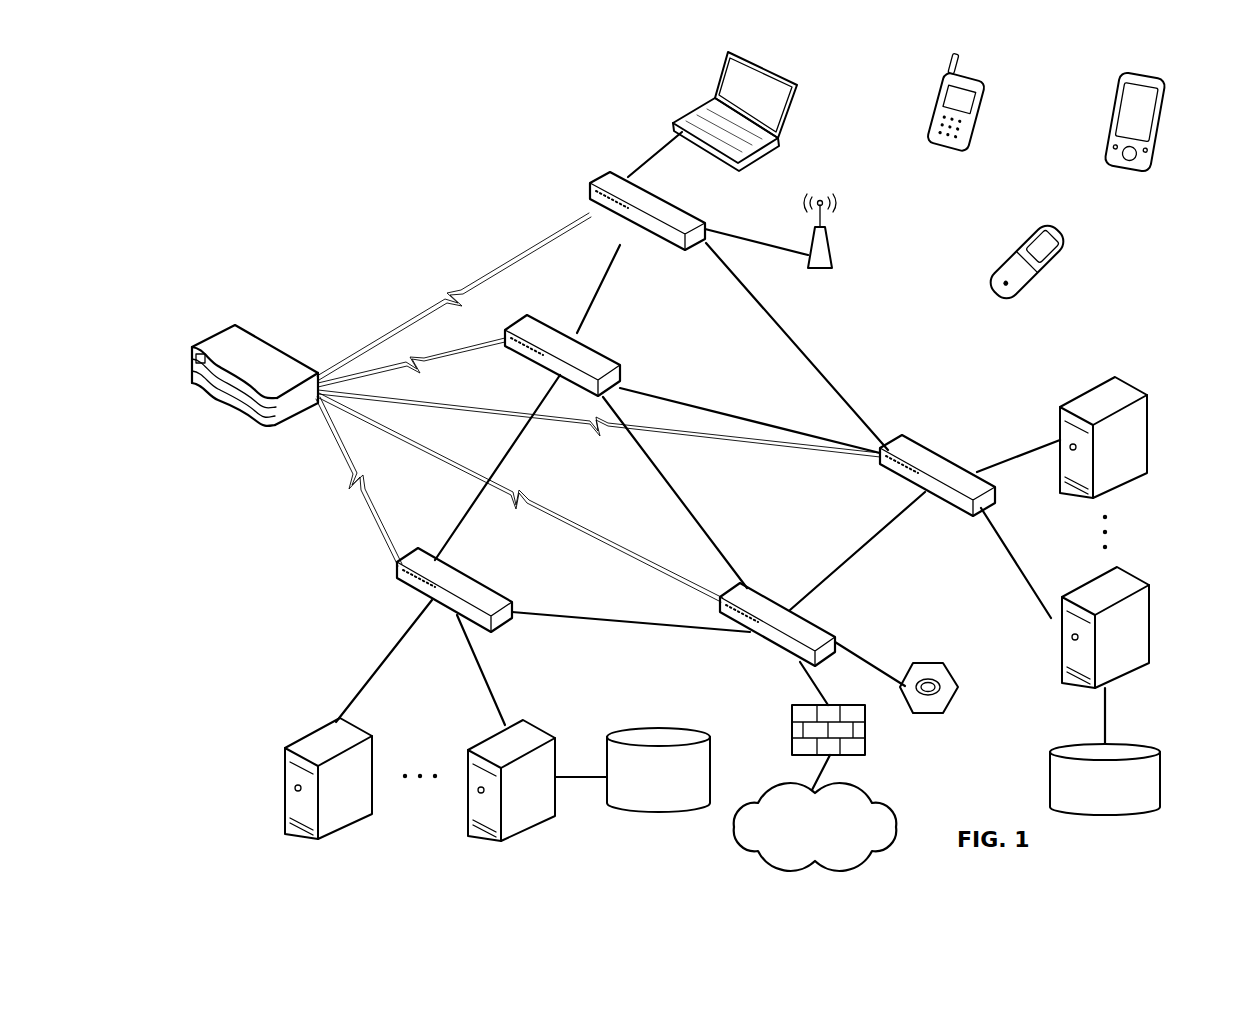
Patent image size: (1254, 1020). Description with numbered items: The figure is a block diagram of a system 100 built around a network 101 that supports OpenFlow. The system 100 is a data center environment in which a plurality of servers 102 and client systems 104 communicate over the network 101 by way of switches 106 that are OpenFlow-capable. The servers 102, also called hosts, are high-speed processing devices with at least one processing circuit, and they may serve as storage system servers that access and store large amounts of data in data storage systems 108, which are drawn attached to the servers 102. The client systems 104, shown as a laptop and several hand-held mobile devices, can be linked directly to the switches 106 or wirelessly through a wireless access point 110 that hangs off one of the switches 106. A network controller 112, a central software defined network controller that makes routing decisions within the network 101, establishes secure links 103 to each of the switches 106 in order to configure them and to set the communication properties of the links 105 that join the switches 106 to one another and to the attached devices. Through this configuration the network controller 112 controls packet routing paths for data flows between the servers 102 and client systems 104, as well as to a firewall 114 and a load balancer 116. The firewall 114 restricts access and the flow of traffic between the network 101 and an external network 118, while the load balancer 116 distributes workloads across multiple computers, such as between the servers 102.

The system 100 is at (260, 95).
The network 101 is at (505, 180).
The servers 102 is at (1130, 374).
The secure links 103 is at (446, 286).
The client systems 104 is at (777, 72).
The links 105 is at (628, 252).
The switches 106 is at (706, 216).
The data storage systems 108 is at (883, 771).
The wireless access points 110 is at (836, 242).
The network controller 112 is at (240, 328).
The firewalls 114 is at (790, 712).
The load balancers 116 is at (930, 660).
The external networks 118 is at (815, 827).